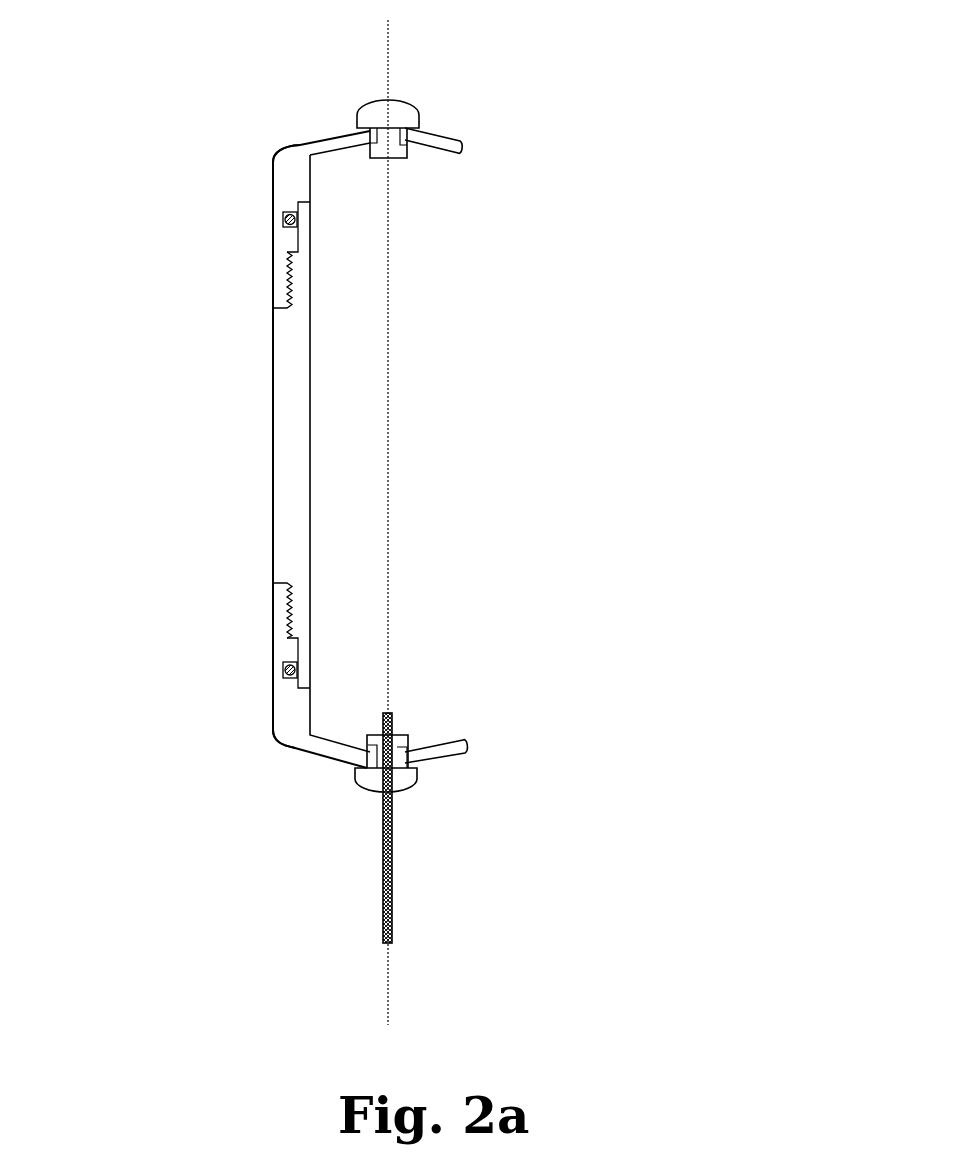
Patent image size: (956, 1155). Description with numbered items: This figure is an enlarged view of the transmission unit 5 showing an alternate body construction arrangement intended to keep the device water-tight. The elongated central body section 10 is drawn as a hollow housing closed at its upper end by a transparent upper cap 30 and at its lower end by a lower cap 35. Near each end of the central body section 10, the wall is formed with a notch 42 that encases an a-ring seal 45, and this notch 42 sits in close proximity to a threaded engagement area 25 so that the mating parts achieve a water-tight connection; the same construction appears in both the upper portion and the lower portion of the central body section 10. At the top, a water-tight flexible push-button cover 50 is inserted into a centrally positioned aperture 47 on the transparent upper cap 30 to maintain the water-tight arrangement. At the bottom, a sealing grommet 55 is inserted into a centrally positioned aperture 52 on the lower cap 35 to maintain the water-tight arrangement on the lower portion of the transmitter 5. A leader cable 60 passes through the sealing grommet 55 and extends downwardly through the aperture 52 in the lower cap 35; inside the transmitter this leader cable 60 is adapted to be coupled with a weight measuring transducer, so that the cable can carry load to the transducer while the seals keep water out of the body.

The transmission unit 5 is at (252, 89).
The central body section 10 is at (309, 442).
The threaded engagement area 25 is at (286, 288).
The transparent upper cap 30 is at (272, 163).
The lower cap 35 is at (284, 711).
The notch 42 is at (284, 216).
The a-ring seal 45 is at (298, 222).
The centrally positioned aperture 47 is at (428, 142).
The water-tight flexible push-button cover 50 is at (410, 115).
The centrally positioned aperture 52 is at (428, 750).
The sealing grommet 55 is at (408, 777).
The leader cable 60 is at (383, 875).